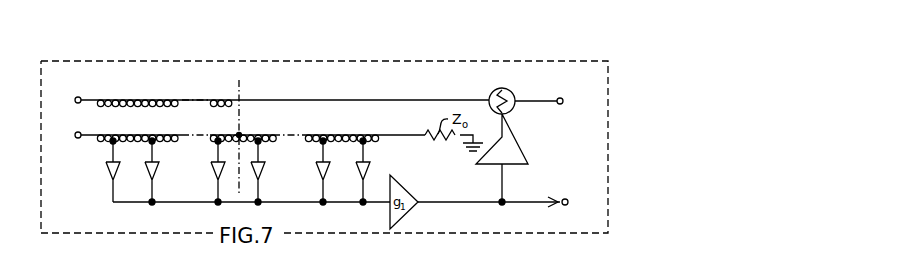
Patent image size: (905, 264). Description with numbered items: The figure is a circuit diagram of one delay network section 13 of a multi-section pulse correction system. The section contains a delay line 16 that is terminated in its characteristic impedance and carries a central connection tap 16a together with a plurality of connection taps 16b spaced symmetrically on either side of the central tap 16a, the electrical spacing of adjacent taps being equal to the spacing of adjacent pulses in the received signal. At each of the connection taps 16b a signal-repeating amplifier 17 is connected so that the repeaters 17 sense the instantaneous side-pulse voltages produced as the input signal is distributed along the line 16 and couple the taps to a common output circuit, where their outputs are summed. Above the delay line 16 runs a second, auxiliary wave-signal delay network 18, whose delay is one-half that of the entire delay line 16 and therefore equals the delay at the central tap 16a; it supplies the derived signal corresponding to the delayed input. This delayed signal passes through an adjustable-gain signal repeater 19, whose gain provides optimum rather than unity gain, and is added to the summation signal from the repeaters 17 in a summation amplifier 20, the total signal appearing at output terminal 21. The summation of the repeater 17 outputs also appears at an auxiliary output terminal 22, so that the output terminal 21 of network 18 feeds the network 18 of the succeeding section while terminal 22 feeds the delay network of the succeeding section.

The delay network section 13 is at (74, 60).
The delay line 16 is at (121, 134).
The central connection tap 16a is at (239, 134).
The connection taps 16b is at (152, 142).
The amplifiers 17 is at (150, 170).
The auxiliary wave-signal delay network 18 is at (138, 99).
The adjustable-gain signal repeater 19 is at (516, 148).
The summation amplifier 20 is at (492, 90).
The output terminal 21 is at (563, 100).
The auxiliary output terminal 22 is at (566, 199).